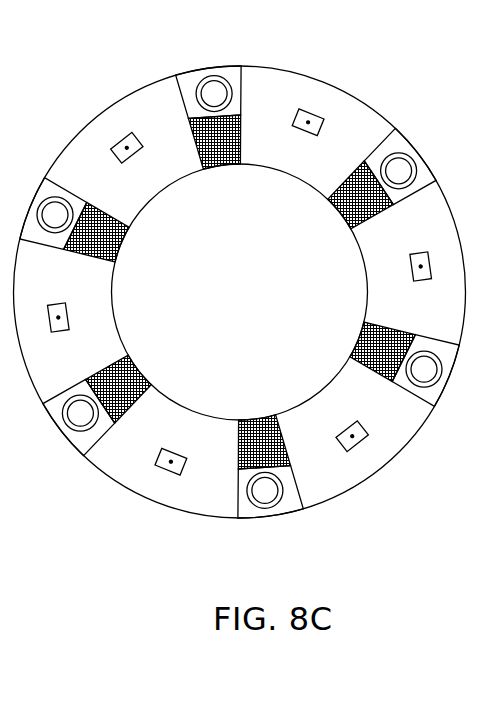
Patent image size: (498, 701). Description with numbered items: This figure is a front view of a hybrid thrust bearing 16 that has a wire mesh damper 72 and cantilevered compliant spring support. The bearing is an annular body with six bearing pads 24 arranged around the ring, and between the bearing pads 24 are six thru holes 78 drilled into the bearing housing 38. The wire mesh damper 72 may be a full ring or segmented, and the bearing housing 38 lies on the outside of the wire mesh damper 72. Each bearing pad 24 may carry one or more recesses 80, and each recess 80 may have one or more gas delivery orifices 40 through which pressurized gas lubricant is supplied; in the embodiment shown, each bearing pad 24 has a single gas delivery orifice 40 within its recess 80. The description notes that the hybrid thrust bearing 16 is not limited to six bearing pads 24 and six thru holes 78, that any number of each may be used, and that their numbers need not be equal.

The hybrid thrust bearing 16 is at (252, 305).
The bearing pad 24 is at (390, 417).
The bearing housing 38 is at (300, 499).
The gas delivery orifice 40 is at (307, 121).
The wire mesh damper 72 is at (381, 208).
The thru hole 78 is at (266, 492).
The recess 80 is at (317, 115).